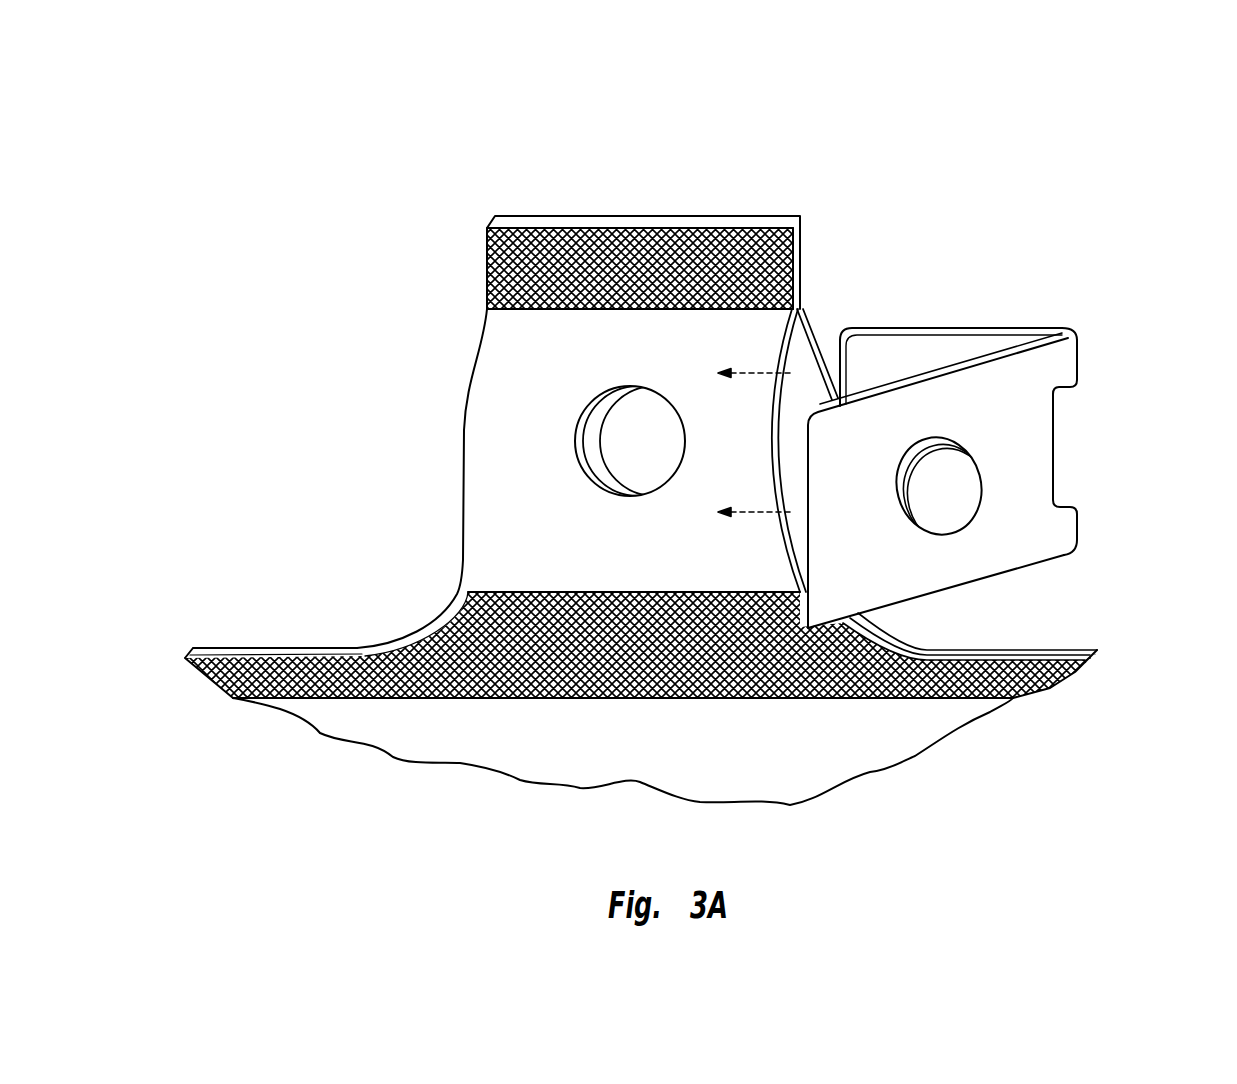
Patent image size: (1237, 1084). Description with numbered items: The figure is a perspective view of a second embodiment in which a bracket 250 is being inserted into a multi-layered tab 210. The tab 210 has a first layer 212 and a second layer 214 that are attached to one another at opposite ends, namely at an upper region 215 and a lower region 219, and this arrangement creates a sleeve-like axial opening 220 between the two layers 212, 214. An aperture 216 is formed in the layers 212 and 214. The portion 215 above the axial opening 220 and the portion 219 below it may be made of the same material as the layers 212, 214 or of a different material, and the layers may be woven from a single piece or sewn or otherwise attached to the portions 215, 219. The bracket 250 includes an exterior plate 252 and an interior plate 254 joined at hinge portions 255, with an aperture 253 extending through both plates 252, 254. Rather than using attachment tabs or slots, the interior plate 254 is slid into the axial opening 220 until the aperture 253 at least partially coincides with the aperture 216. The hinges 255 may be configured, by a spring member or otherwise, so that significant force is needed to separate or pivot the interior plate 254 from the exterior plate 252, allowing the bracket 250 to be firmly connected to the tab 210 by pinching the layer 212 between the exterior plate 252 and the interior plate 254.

The tab 210 is at (752, 182).
The first layer 212 is at (482, 517).
The second layer 214 is at (817, 336).
The region 215 is at (540, 226).
The aperture 216 is at (628, 428).
The region 219 is at (377, 644).
The sleeve-like axial opening 220 is at (790, 406).
The bracket 250 is at (1082, 433).
The exterior plate 252 is at (943, 573).
The aperture 253 is at (920, 510).
The interior plate 254 is at (960, 352).
The hinge portions 255 is at (1080, 362).